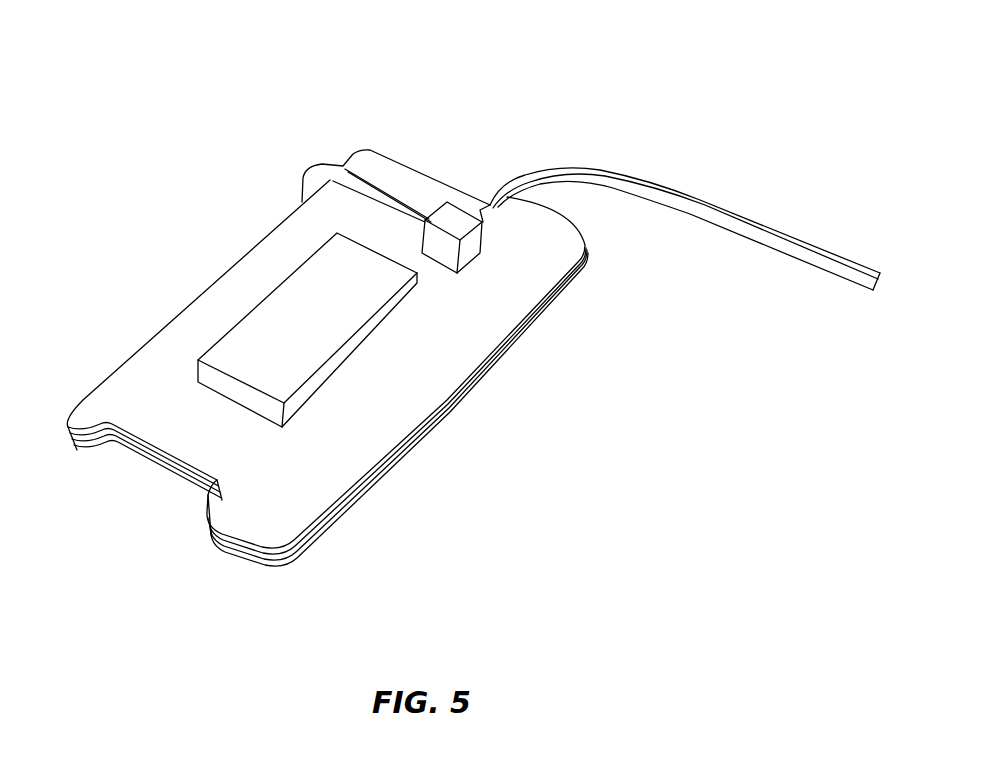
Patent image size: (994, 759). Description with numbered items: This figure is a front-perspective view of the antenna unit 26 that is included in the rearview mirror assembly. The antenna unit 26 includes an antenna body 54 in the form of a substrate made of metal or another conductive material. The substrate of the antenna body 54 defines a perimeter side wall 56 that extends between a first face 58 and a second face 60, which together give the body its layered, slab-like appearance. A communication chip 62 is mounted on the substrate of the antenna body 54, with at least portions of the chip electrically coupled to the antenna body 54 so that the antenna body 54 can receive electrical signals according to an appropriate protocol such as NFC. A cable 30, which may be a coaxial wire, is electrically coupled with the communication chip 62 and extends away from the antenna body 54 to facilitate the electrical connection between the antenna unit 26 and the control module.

The antenna unit 26 is at (389, 135).
The cable 30 is at (760, 231).
The antenna body 54 is at (415, 393).
The perimeter side wall 56 is at (237, 542).
The first face 58 is at (350, 463).
The second face 60 is at (288, 574).
The communication chip 62 is at (263, 325).